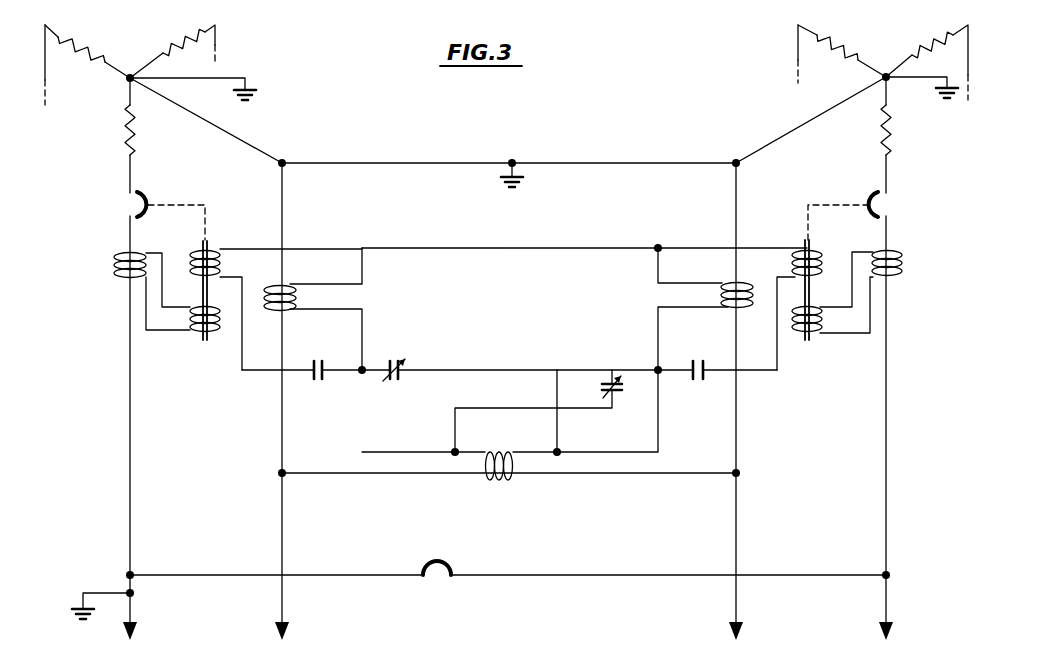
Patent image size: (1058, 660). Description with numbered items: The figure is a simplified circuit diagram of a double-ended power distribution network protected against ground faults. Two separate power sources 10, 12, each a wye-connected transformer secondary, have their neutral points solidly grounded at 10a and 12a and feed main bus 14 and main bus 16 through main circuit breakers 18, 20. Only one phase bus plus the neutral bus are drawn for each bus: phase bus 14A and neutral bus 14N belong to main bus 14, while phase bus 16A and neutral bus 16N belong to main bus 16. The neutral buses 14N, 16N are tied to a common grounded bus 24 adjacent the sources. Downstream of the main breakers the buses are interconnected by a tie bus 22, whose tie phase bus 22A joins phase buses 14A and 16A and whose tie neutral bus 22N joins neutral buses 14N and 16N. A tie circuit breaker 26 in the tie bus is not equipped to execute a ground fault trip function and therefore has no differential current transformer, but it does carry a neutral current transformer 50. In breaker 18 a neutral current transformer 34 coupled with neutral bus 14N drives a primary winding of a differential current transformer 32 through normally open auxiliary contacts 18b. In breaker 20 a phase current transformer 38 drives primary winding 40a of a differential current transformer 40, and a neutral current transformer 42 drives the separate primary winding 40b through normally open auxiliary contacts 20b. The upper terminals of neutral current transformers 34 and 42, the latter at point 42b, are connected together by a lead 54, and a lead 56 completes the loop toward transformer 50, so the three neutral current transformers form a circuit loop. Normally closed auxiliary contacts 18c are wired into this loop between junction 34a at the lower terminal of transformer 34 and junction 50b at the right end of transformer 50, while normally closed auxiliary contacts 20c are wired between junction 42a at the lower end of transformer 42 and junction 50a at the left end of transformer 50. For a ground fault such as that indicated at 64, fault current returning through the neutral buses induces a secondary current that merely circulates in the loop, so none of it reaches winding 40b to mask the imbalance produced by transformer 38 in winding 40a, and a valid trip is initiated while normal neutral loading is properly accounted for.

The power source 10 is at (148, 48).
The neutral point ground 10a is at (253, 91).
The power source 12 is at (898, 46).
The neutral point ground 12a is at (942, 91).
The main bus 14 is at (216, 476).
The phase bus 14A is at (128, 421).
The neutral bus 14N is at (281, 421).
The main bus 16 is at (830, 479).
The neutral bus 16N is at (737, 429).
The phase bus 16A is at (888, 433).
The main circuit breaker 18 is at (104, 261).
The circuit breaker auxiliary contacts 18b is at (318, 358).
The second set of auxiliary contacts 18c is at (396, 358).
The main circuit breaker 20 is at (910, 262).
The circuit breaker auxiliary contacts 20b is at (698, 359).
The second set of auxiliary contacts 20c is at (602, 385).
The tie bus 22 is at (549, 546).
The tie neutral bus 22N is at (345, 474).
The tie phase bus 22A is at (590, 576).
The common grounded bus 24 is at (400, 162).
The tie circuit breaker 26 is at (428, 550).
The differential current transformer 32 is at (196, 338).
The neutral current transformer 34 is at (270, 289).
The junction 34a is at (359, 374).
The phase current transformer 38 is at (898, 256).
The differential current transformer 40 is at (810, 342).
The primary winding 40a is at (795, 335).
The primary winding 40b is at (820, 254).
The neutral current transformer 42 is at (740, 309).
The junction 42a is at (655, 368).
The junction 42b is at (655, 252).
The neutral current transformer 50 is at (488, 485).
The junction 50a is at (453, 448).
The junction 50b is at (556, 448).
The lead 54 is at (503, 247).
The lead 56 is at (625, 450).
The ground fault 64 is at (105, 592).